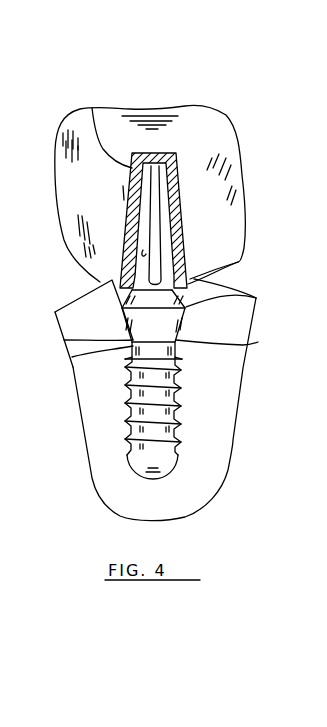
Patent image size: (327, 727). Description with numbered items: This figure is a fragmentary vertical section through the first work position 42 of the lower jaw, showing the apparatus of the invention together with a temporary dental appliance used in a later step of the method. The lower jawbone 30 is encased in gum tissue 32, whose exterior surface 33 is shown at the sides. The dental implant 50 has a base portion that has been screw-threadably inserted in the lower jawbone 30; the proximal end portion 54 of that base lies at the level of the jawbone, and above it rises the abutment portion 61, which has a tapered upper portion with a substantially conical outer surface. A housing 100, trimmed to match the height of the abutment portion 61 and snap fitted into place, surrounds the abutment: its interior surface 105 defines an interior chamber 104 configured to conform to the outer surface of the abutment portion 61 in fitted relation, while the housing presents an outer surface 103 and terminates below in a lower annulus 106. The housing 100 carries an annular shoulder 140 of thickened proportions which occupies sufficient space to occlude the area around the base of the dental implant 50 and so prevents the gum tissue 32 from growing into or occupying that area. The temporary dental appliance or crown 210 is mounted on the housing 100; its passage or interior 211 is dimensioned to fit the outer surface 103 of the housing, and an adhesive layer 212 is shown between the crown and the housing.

The lower jawbone 30 is at (225, 397).
The gum tissue 32 is at (223, 325).
The exterior surface 33 is at (75, 293).
The first work position 42 is at (155, 100).
The dental implant 50 is at (130, 422).
The proximal end portion 54 is at (73, 362).
The abutment portion 61 is at (183, 247).
The housing 100 is at (183, 202).
The outer surface 103 is at (123, 192).
The interior chamber 104 is at (123, 224).
The interior surface 105 is at (123, 242).
The lower annulus 106 is at (243, 294).
The annular shoulder 140 is at (238, 262).
The temporary dental appliance or crown 210 is at (222, 119).
The passage or interior 211 is at (180, 183).
The adhesive layer 212 is at (92, 108).